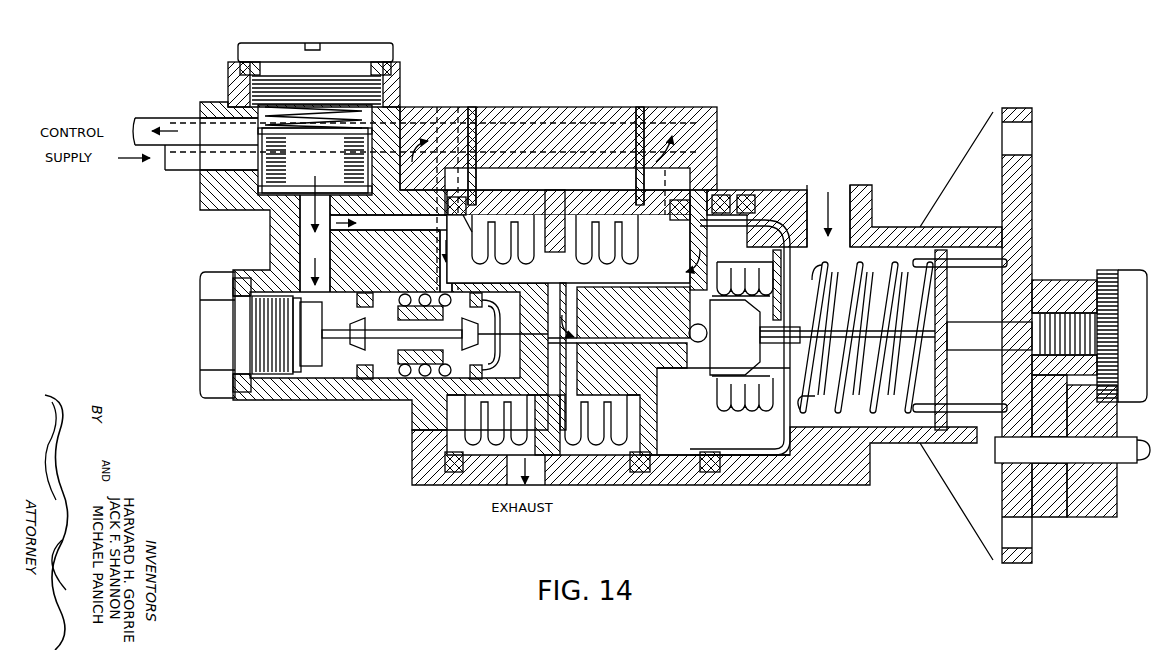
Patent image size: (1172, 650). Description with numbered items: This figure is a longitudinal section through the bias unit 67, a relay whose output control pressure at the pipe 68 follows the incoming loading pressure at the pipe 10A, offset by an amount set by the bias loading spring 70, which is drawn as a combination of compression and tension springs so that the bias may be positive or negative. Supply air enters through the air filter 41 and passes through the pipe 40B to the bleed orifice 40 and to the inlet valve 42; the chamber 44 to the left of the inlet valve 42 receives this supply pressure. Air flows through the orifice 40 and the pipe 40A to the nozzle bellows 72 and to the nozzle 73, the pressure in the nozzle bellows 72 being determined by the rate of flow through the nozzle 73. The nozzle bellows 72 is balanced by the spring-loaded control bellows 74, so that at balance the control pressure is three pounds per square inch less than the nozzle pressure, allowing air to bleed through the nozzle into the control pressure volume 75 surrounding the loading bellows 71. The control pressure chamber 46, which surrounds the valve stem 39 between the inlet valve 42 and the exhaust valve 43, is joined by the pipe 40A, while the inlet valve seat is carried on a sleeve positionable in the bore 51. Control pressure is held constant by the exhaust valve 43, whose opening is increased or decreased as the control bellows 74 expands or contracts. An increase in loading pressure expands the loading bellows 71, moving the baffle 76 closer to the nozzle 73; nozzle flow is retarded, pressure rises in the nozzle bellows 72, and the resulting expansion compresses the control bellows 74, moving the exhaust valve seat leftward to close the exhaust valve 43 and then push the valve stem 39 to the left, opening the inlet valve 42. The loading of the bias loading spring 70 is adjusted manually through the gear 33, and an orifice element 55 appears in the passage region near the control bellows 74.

The pipe 68 is at (152, 119).
The air filter 41 is at (325, 175).
The bleed orifice 40 is at (315, 234).
The pipe 40A is at (348, 228).
The pipe 40B is at (342, 258).
The control bellows 74 is at (500, 230).
The restriction orifice 55 is at (460, 216).
The loading bellows 71 is at (727, 265).
The nozzle 73 is at (619, 315).
The nozzle bellows 72 is at (590, 395).
The control pressure volume 75 is at (702, 431).
The baffle 76 is at (698, 343).
The bias loading spring 70 is at (863, 392).
The bias unit 67 is at (810, 486).
The gear 33 is at (1112, 272).
The chamber 44 is at (350, 328).
The inlet valve 42 is at (352, 338).
The valve stem 39 is at (386, 341).
The control pressure chamber 46 is at (408, 376).
The exhaust valve 43 is at (478, 372).
The bore 51 is at (318, 372).
The pipe 10A is at (882, 182).